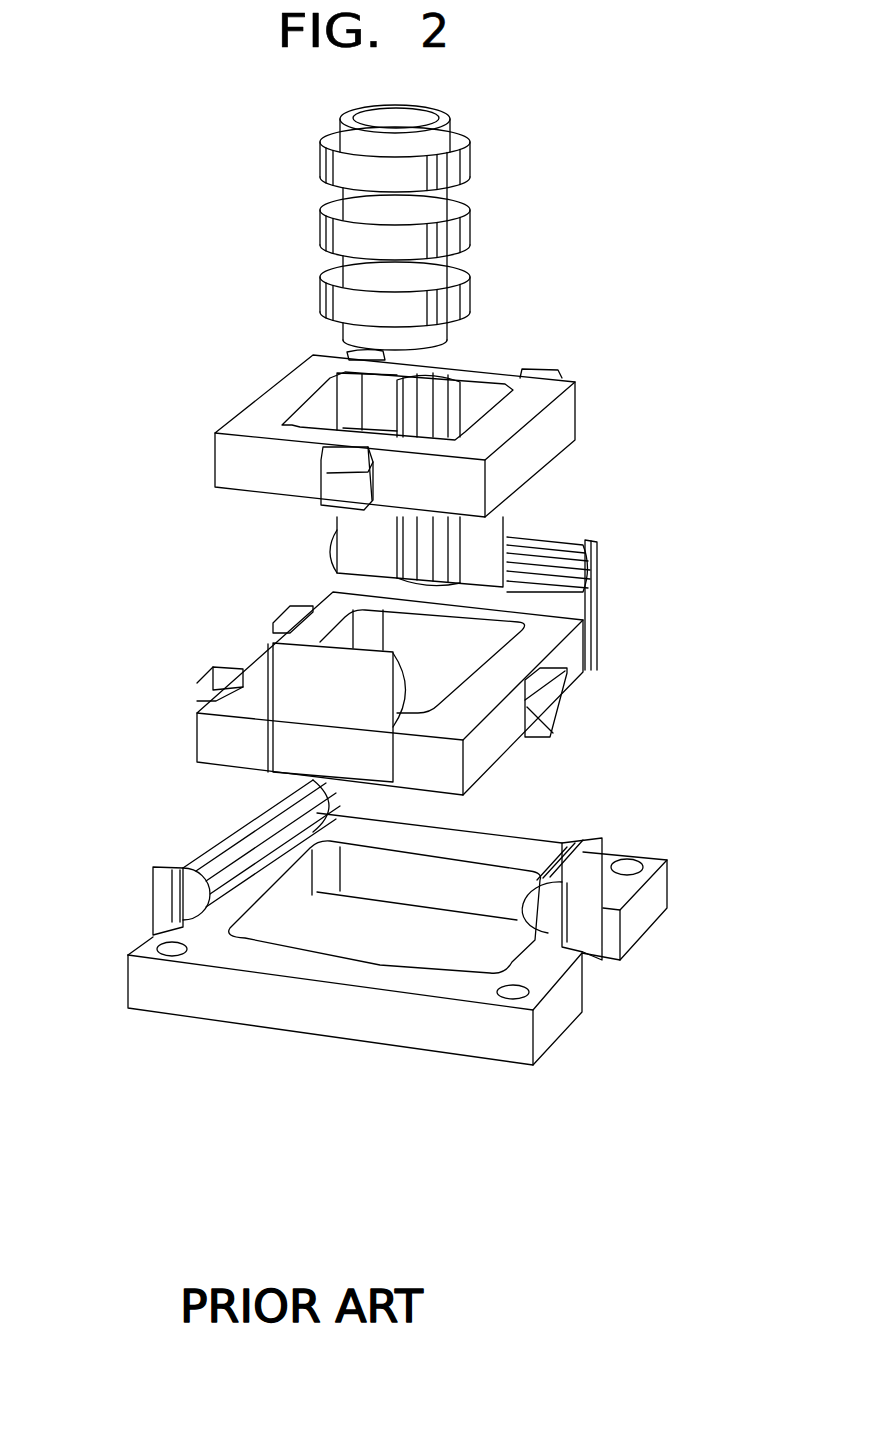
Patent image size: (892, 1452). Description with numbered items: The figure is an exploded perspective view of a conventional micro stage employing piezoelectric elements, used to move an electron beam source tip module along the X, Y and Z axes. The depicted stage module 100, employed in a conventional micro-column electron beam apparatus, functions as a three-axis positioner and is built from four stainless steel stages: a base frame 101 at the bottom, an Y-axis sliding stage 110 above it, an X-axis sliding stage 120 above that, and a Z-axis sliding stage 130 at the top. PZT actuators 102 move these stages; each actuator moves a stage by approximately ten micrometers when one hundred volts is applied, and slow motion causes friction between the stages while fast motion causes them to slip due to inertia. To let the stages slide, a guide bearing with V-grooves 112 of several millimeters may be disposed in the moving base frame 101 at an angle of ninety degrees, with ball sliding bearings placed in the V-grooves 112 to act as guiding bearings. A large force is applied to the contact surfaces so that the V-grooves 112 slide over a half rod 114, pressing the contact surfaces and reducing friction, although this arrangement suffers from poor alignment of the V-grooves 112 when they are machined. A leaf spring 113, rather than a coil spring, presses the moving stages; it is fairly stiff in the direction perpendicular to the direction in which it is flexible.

The stage module 100 is at (252, 1066).
The base frame 101 is at (555, 1010).
The PZT actuator 102 is at (217, 852).
The Y-axis sliding stage 110 is at (573, 648).
The V-groove 112 is at (552, 723).
The leaf spring 113 is at (300, 670).
The half rod 114 is at (558, 573).
The X-axis sliding stage 120 is at (547, 430).
The Z-axis sliding stage 130 is at (458, 177).